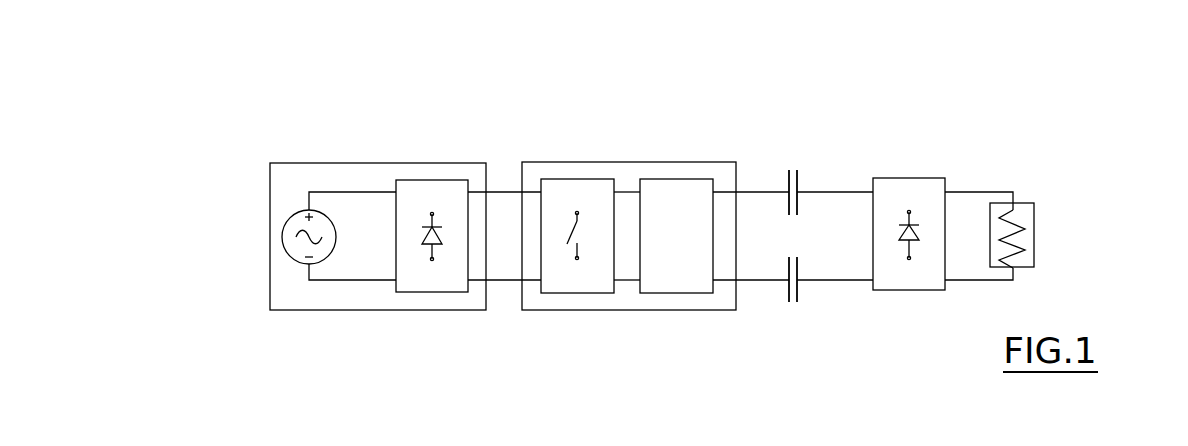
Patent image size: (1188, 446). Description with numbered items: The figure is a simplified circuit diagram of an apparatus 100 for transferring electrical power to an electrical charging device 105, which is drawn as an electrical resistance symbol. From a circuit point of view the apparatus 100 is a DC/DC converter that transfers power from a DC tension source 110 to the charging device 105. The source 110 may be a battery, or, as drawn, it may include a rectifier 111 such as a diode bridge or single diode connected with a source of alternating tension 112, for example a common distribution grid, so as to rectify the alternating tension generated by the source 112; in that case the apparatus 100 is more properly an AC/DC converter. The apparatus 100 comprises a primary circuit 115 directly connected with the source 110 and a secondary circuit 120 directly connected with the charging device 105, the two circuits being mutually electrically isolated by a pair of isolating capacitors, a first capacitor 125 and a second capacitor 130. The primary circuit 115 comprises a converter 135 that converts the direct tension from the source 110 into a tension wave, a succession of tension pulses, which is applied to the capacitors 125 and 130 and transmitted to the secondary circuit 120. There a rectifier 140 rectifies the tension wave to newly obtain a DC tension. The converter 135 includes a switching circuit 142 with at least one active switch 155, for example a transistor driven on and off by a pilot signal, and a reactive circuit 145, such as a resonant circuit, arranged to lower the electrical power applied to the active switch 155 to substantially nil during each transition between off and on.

The apparatus for transferring electrical power 100 is at (754, 136).
The electrical charging device 105 is at (1028, 215).
The DC tension source 110 is at (346, 168).
The rectifier 111 is at (425, 188).
The source of alternating tension 112 is at (298, 247).
The primary circuit 115 is at (511, 135).
The secondary circuit 120 is at (888, 135).
The first capacitor 125 is at (798, 158).
The second capacitor 130 is at (798, 312).
The converter 135 is at (606, 167).
The rectifier 140 is at (926, 189).
The switching circuit 142 is at (567, 283).
The reactive circuit 145 is at (660, 280).
The active switch 155 is at (573, 232).